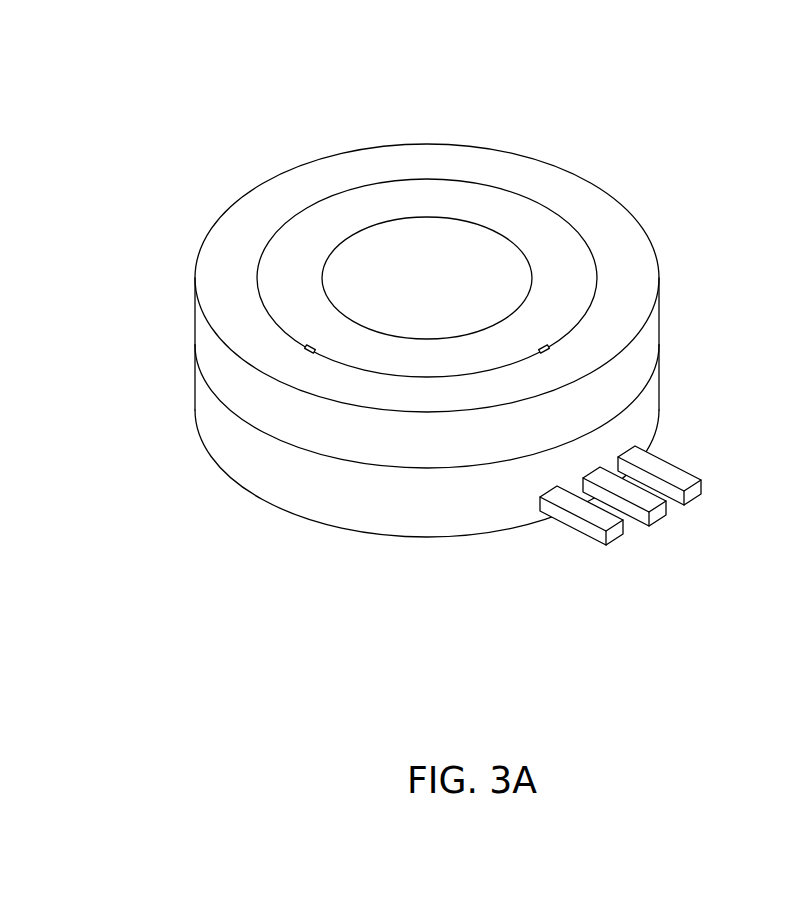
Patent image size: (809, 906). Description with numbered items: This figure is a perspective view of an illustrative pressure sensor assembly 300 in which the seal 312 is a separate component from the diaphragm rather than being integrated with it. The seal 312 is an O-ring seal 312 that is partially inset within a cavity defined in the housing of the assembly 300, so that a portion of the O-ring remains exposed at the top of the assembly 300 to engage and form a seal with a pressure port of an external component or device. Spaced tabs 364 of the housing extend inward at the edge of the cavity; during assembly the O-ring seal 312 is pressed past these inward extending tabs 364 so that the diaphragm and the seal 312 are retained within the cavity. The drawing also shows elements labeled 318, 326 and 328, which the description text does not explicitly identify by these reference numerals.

The pressure sensor assembly 300 is at (455, 295).
The seal 312 is at (542, 242).
The leads 318 is at (650, 515).
The lower housing portion 326 is at (244, 464).
The upper housing portion 328 is at (201, 327).
The spaced tabs 364 is at (307, 351).